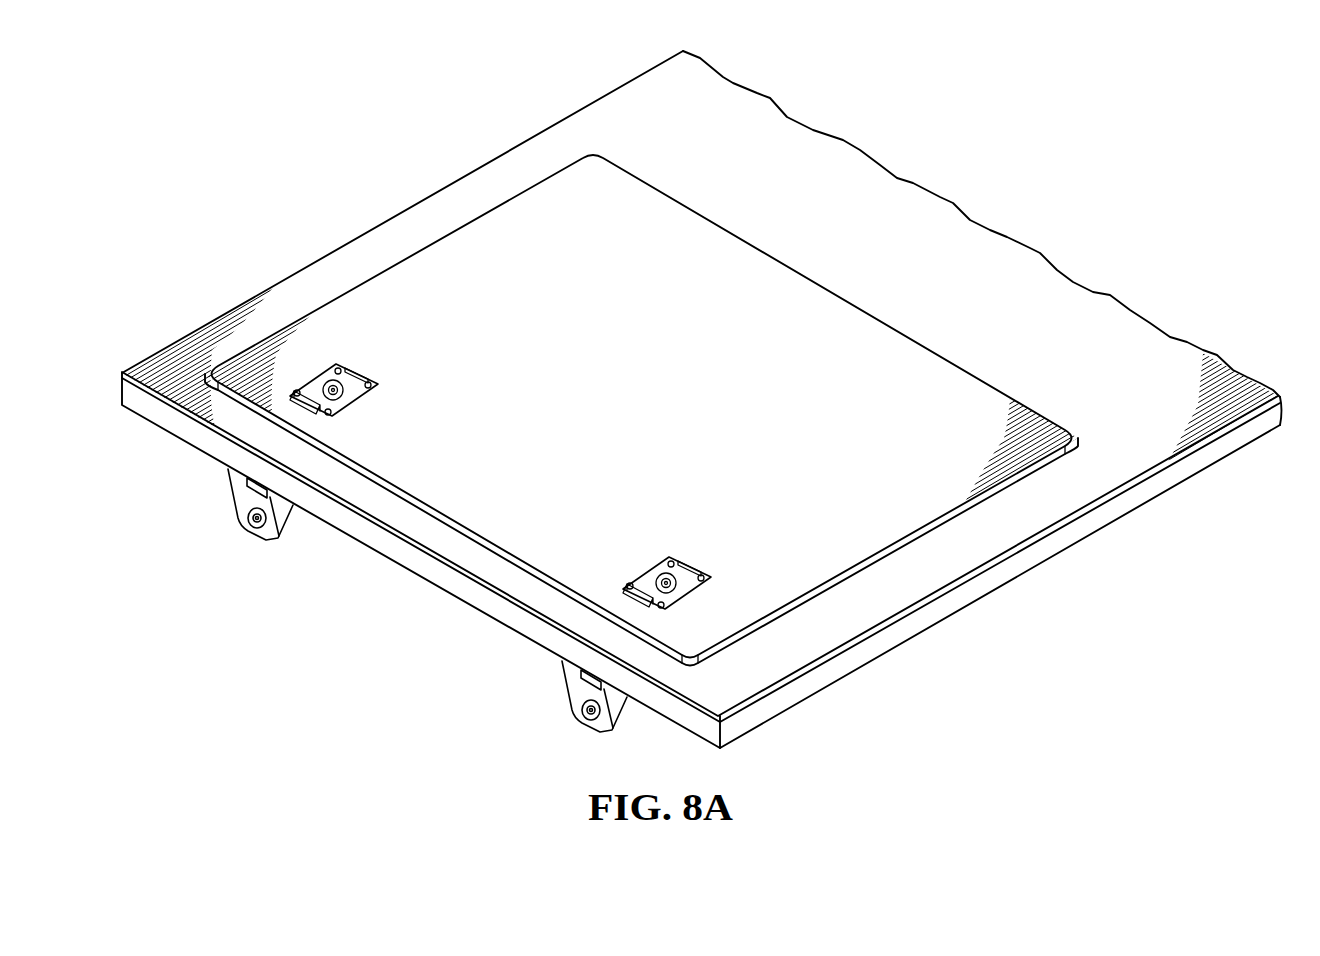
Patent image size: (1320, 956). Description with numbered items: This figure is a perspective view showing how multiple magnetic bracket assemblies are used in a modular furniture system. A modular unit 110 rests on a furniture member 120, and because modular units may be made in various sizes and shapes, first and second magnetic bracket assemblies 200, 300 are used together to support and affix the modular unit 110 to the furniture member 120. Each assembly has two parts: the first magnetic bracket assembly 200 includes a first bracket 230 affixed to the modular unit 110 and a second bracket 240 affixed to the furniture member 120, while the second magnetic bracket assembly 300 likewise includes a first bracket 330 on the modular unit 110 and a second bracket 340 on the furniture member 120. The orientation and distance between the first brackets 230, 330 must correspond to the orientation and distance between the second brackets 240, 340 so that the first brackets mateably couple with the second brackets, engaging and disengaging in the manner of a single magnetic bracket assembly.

The modular unit 110 is at (834, 307).
The furniture member 120 is at (952, 213).
The first magnetic bracket assembly 200 is at (340, 364).
The first bracket 230 is at (355, 393).
The second bracket 240 is at (288, 523).
The second magnetic bracket assembly 300 is at (700, 593).
The first bracket 330 is at (660, 567).
The second bracket 340 is at (620, 717).